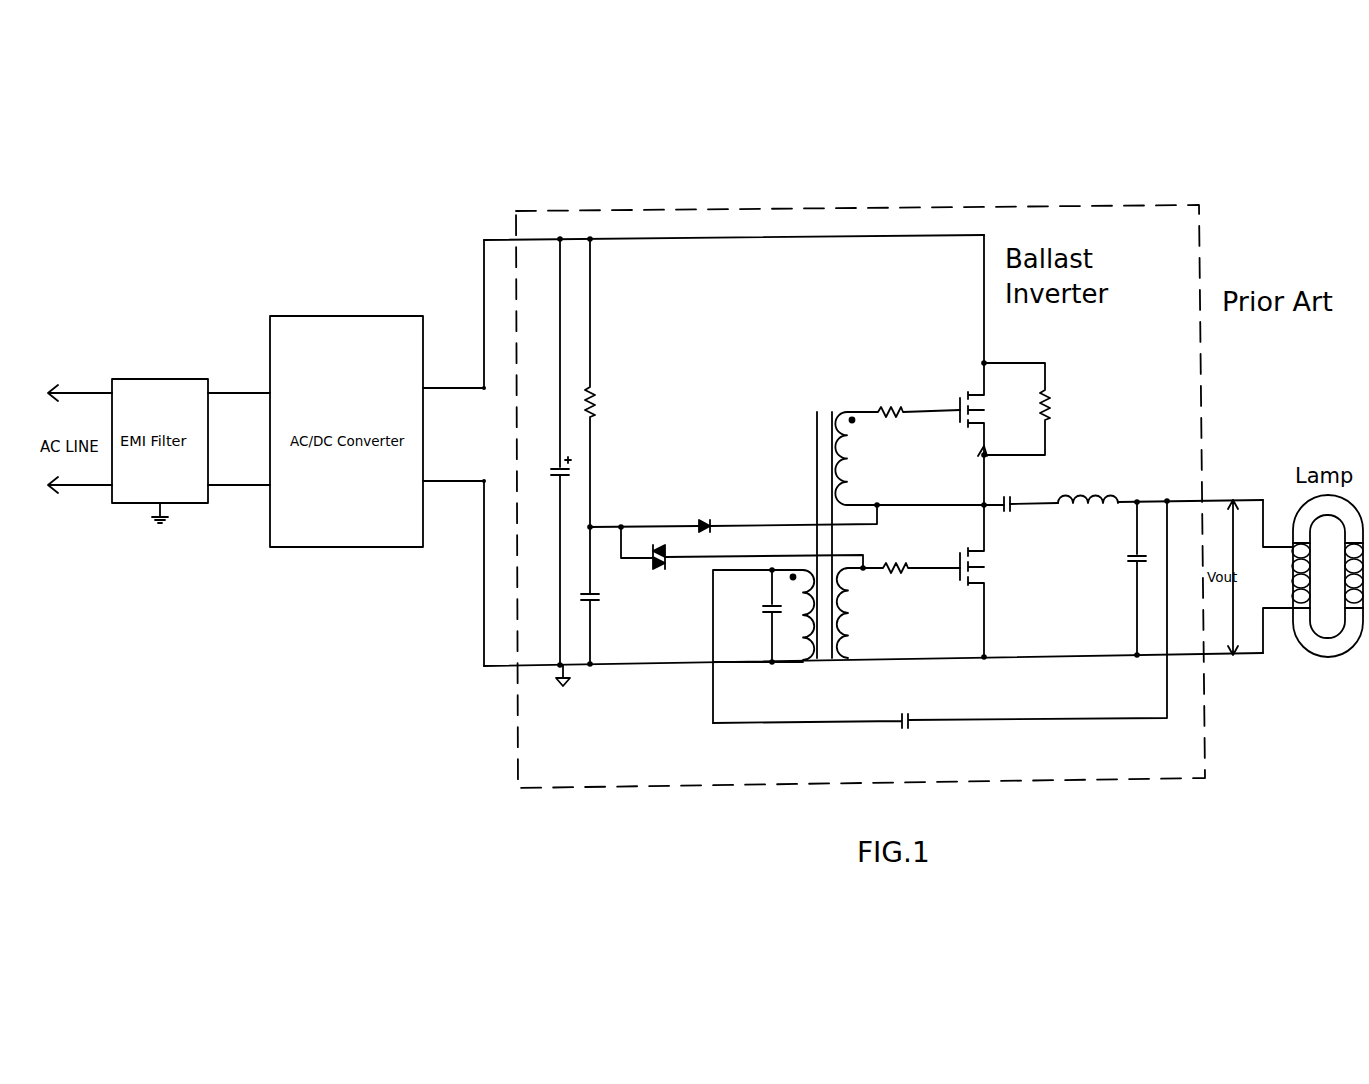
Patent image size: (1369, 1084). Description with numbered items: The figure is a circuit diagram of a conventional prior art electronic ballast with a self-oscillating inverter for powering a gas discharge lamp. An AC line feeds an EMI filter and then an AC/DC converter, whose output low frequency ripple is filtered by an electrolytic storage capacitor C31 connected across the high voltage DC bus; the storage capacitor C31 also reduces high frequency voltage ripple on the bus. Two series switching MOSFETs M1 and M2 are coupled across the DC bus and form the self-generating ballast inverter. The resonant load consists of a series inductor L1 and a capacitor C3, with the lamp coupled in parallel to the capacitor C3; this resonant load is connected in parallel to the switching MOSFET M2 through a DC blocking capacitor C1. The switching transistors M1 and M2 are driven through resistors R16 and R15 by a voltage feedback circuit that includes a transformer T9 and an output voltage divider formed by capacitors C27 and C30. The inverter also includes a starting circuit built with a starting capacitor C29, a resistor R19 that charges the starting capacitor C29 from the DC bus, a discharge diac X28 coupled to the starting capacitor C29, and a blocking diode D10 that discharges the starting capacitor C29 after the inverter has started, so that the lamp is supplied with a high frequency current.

The electrolytic storage capacitor C31 is at (544, 452).
The resistor R19 is at (613, 383).
The starting capacitor C29 is at (609, 595).
The blocking diode D10 is at (733, 511).
The diac X28 is at (742, 568).
The capacitor C30 is at (758, 646).
The transformer T9 is at (823, 524).
The resistor R16 is at (903, 397).
The resistor R15 is at (904, 551).
The switching MOSFET M1 is at (1005, 370).
The switching MOSFET M2 is at (992, 581).
The DC blocking capacitor C1 is at (1018, 489).
The inductor L1 is at (1088, 483).
The capacitor C3 is at (1120, 578).
The capacitor C27 is at (940, 630).